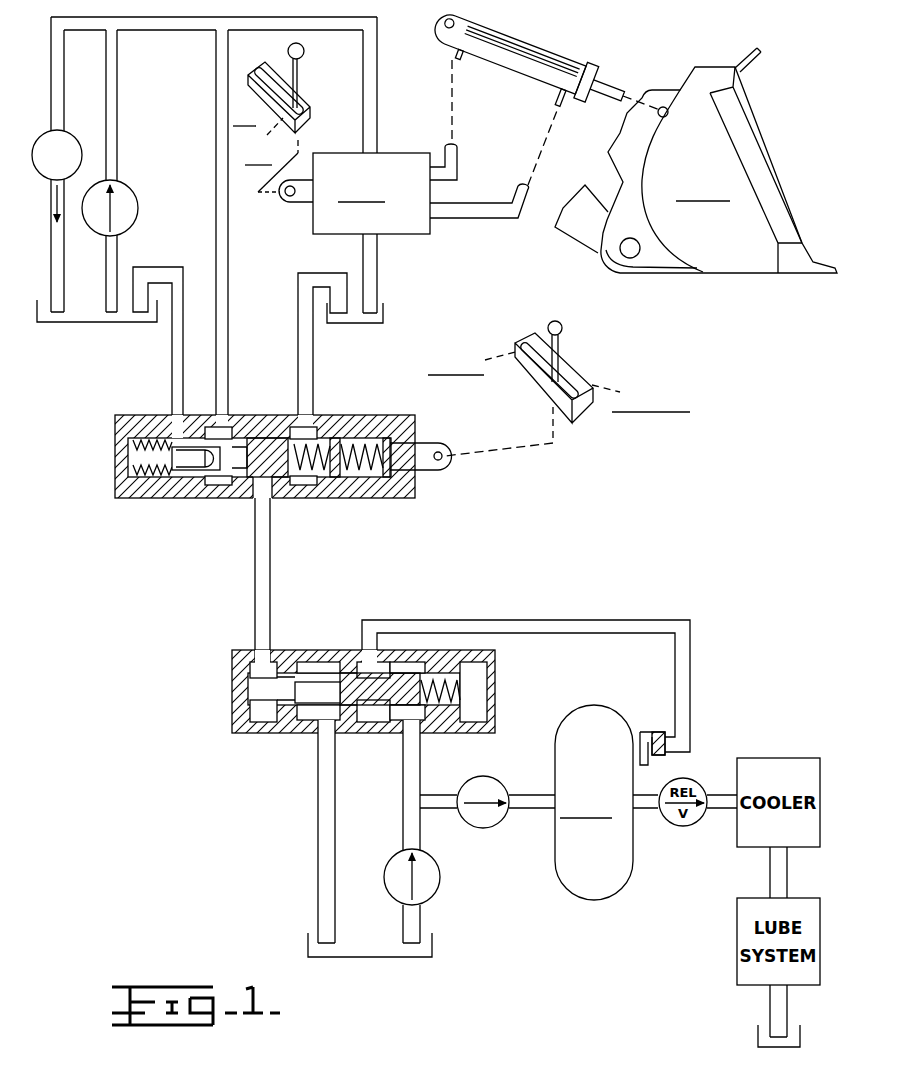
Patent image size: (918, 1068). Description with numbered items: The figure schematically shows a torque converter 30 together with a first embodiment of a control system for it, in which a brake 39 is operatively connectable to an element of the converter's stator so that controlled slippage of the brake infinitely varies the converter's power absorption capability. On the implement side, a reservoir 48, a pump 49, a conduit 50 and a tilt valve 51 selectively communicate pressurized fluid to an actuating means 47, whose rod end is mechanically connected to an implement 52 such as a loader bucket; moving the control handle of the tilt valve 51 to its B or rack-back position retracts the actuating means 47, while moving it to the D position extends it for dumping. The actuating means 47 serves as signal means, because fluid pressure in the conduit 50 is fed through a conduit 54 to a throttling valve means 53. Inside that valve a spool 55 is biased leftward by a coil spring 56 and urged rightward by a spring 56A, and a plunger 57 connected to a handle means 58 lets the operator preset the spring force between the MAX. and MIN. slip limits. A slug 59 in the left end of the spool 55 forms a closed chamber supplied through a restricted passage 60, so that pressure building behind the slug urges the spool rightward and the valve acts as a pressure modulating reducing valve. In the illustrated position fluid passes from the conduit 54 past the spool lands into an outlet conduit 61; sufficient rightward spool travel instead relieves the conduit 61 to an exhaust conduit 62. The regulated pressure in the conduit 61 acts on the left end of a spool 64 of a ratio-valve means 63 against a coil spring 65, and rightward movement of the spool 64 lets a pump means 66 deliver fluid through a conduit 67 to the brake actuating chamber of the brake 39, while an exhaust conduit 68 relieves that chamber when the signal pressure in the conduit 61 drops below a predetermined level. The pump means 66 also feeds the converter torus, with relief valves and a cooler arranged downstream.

The torque converter 30 is at (594, 802).
The brake 39 is at (647, 727).
The actuating means 47 is at (565, 46).
The reservoir 48 is at (95, 322).
The pump 49 is at (128, 202).
The conduit 50 is at (377, 83).
The tilt valve 51 is at (395, 138).
The implement 52 is at (696, 160).
The throttling valve means 53 is at (247, 459).
The conduit 54 is at (228, 256).
The spool 55 is at (287, 466).
The coil spring 56 is at (343, 470).
The spring 56A is at (150, 477).
The plunger 57 is at (378, 474).
The handle means 58 is at (563, 327).
The slug 59 is at (193, 466).
The restricted passage 60 is at (237, 455).
The outlet conduit 61 is at (255, 618).
The exhaust conduit 62 is at (313, 373).
The ratio-valve means 63 is at (328, 667).
The spool 64 is at (310, 674).
The coil spring 65 is at (480, 688).
The pump means 66 is at (440, 876).
The conduit 67 is at (567, 620).
The exhaust conduit 68 is at (320, 852).